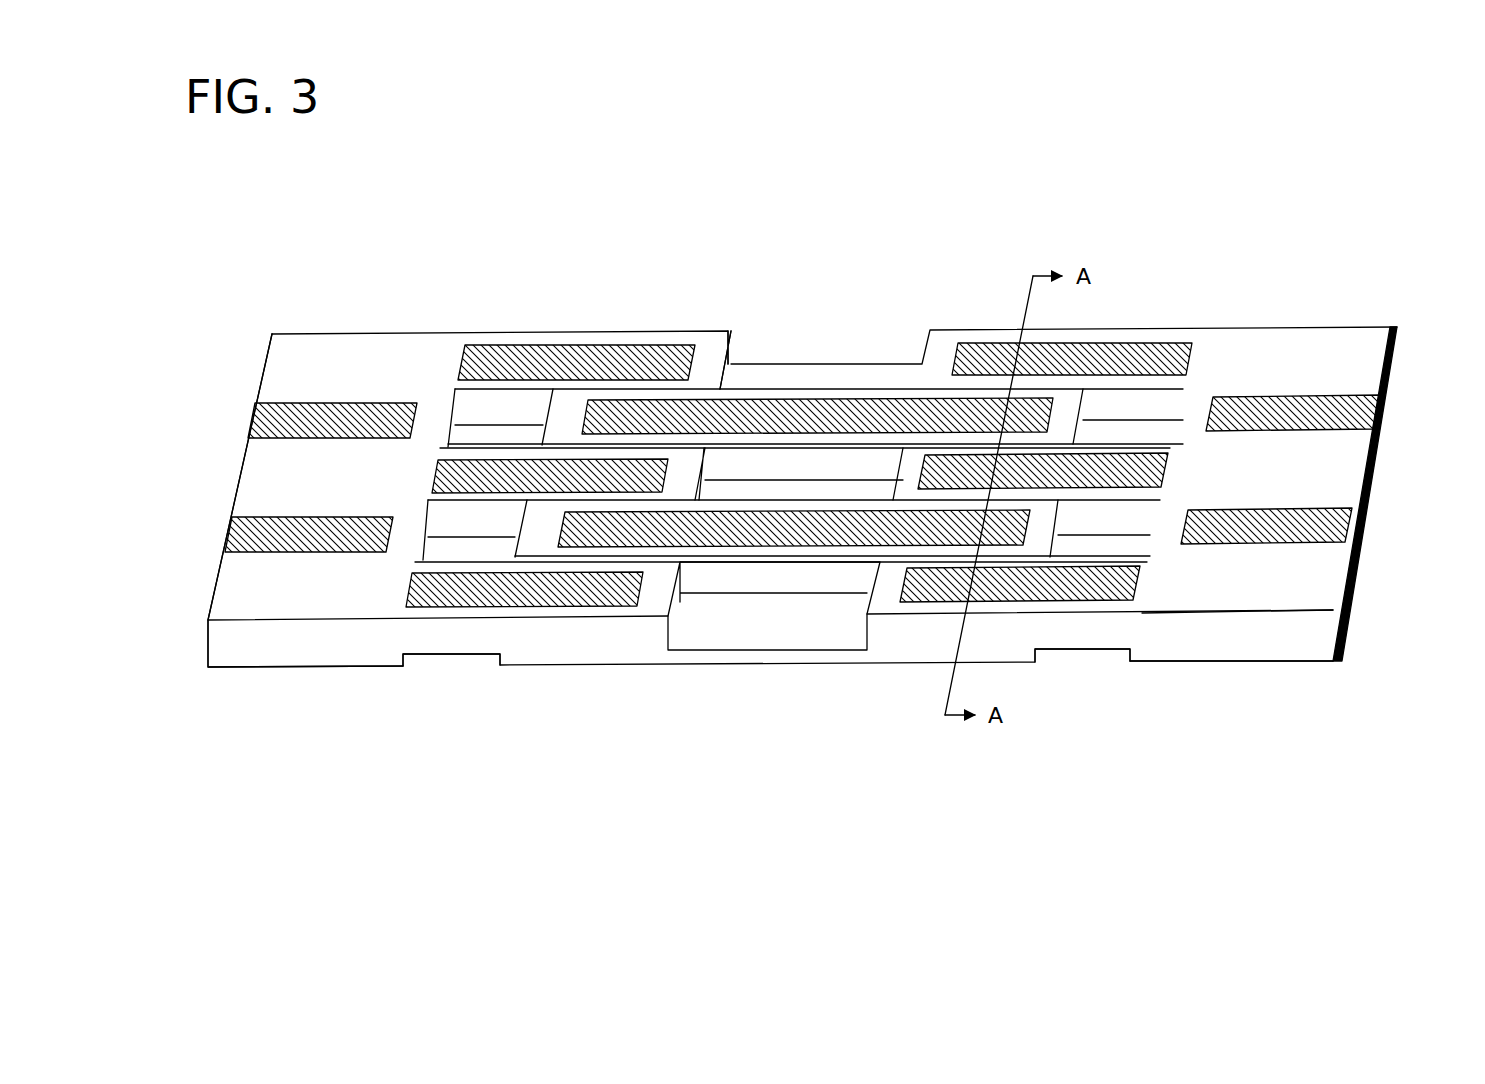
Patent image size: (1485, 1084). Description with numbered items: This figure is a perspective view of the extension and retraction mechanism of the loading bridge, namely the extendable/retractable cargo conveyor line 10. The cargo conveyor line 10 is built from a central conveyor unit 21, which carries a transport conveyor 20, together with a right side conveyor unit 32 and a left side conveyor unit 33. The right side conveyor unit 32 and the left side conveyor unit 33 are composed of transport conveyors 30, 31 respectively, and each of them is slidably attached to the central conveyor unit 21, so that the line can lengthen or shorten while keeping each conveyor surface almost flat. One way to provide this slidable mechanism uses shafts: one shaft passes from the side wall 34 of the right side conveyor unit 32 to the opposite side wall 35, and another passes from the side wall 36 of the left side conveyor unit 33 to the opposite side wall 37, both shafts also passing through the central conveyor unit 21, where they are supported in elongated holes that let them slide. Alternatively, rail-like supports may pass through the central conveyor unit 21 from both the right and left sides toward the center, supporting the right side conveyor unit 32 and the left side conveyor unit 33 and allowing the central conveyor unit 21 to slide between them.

The extendable/retractable cargo conveyor line 10 is at (1300, 279).
The transport conveyor 20 is at (825, 408).
The central conveyor unit 21 is at (715, 631).
The transport conveyor 30 is at (1142, 613).
The transport conveyor 31 is at (410, 615).
The right side conveyor unit 32 is at (1280, 598).
The left side conveyor unit 33 is at (286, 613).
The side wall 34 is at (1143, 634).
The side wall 35 is at (1400, 353).
The side wall 36 is at (610, 633).
The side wall 37 is at (736, 346).